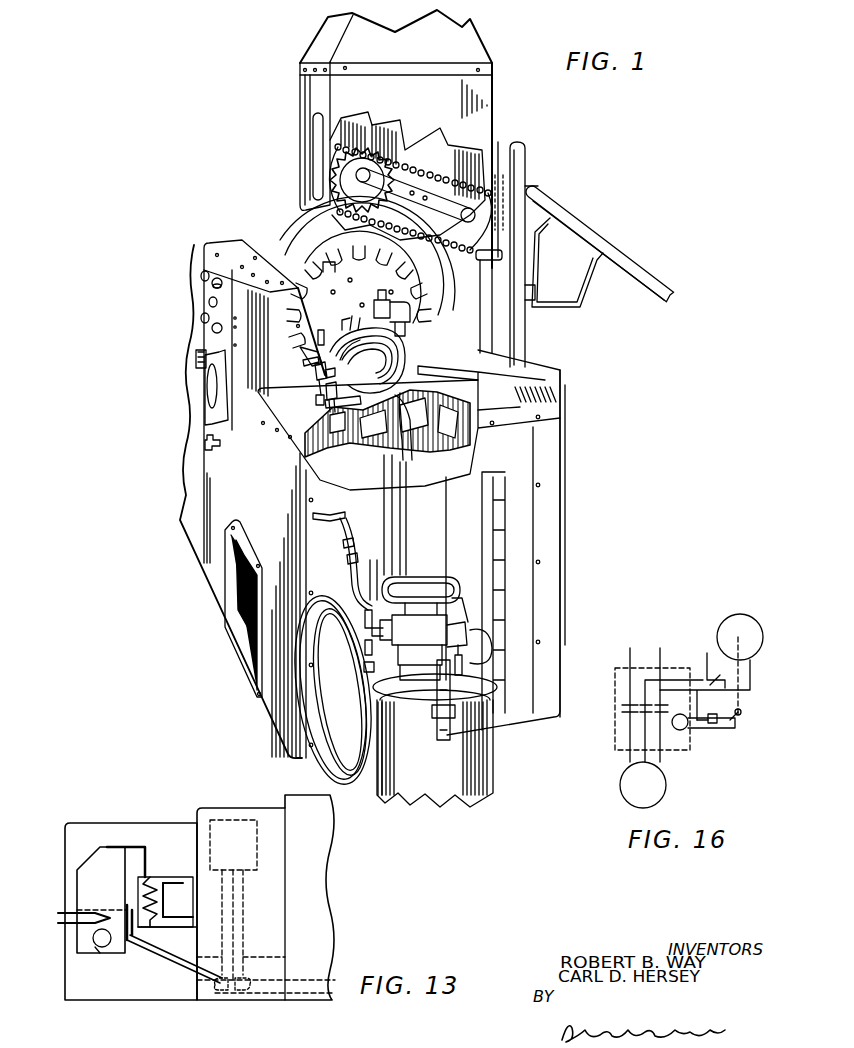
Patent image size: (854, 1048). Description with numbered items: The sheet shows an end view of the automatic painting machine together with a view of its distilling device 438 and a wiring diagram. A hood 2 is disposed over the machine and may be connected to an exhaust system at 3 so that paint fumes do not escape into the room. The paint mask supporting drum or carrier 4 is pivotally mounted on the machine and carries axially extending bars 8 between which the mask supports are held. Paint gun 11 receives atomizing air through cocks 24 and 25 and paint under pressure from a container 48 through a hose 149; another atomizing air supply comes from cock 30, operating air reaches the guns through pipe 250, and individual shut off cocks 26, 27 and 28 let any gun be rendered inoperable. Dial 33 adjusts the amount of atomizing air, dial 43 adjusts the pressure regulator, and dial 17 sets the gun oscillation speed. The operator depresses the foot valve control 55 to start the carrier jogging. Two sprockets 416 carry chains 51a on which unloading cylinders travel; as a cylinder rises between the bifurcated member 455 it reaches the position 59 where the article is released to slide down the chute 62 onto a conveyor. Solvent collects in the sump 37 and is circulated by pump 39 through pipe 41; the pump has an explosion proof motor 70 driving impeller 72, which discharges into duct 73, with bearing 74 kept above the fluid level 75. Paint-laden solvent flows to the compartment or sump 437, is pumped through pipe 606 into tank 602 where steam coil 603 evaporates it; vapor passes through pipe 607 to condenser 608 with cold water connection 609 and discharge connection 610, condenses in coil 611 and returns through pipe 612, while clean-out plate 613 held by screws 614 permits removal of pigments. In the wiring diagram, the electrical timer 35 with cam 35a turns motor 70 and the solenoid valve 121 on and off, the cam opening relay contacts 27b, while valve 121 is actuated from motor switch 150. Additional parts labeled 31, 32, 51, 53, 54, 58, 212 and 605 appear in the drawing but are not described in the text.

In FIG. 1, the hood 2 is at (482, 132).
In FIG. 1, the exhaust system connection 3 is at (470, 45).
In FIG. 1, the paint mask supporting drum or carrier 4 is at (408, 279).
In FIG. 1, the axially extending bars 8 is at (325, 272).
In FIG. 1, the paint gun 11 is at (406, 300).
In FIG. 1, the dial 17 is at (212, 330).
In FIG. 1, the cock 24 is at (293, 326).
In FIG. 1, the cock 25 is at (321, 330).
In FIG. 1, the shut off cock 26 is at (300, 347).
In FIG. 1, the shut off cock 27 is at (315, 372).
In FIG. 16, the shut off cock 27 is at (690, 750).
In FIG. 16, the relay contacts 27b is at (627, 712).
In FIG. 1, the shut off cock 28 is at (303, 362).
In FIG. 1, the cock 30 is at (387, 423).
In FIG. 1, the fitting 31 is at (329, 404).
In FIG. 1, the hose coil 32 is at (371, 388).
In FIG. 1, the dial 33 is at (201, 275).
In FIG. 1, the electrical timer 35 is at (205, 409).
In FIG. 16, the electrical timer 35 is at (750, 628).
In FIG. 16, the cam 35a is at (741, 712).
In FIG. 1, the sump 37 is at (262, 501).
In FIG. 13, the sump 37 is at (315, 878).
In FIG. 13, the pump 39 is at (252, 850).
In FIG. 1, the pipe 41 is at (221, 387).
In FIG. 13, the pipe 41 is at (258, 992).
In FIG. 1, the dial 43 is at (201, 320).
In FIG. 1, the container 48 is at (431, 770).
In FIG. 1, the regulator 51 is at (400, 577).
In FIG. 1, the chains 51a is at (445, 160).
In FIG. 1, the hose connection 53 is at (345, 514).
In FIG. 1, the hose 54 is at (370, 636).
In FIG. 1, the foot valve control 55 is at (240, 663).
In FIG. 1, the valve 58 is at (377, 291).
In FIG. 1, the position 59 is at (365, 178).
In FIG. 1, the chute 62 is at (608, 248).
In FIG. 13, the electrical motor 70 is at (240, 917).
In FIG. 16, the electrical motor 70 is at (666, 785).
In FIG. 13, the impeller 72 is at (222, 978).
In FIG. 13, the duct 73 is at (244, 978).
In FIG. 13, the bearing 74 is at (248, 940).
In FIG. 13, the fluid level 75 is at (255, 957).
In FIG. 16, the electrical valve 121 is at (714, 723).
In FIG. 1, the hose 149 is at (409, 665).
In FIG. 1, the motor switch 150 is at (197, 360).
In FIG. 16, the motor switch 150 is at (709, 661).
In FIG. 1, the control knob 212 is at (213, 287).
In FIG. 1, the pipe 250 is at (316, 400).
In FIG. 1, the sprockets 416 is at (368, 165).
In FIG. 1, the compartment or sump 437 is at (186, 530).
In FIG. 13, the compartment or sump 437 is at (224, 808).
In FIG. 13, the distilling device 438 is at (95, 993).
In FIG. 1, the bifurcated member 455 is at (514, 160).
In FIG. 13, the tank 602 is at (115, 898).
In FIG. 13, the steam coil 603 is at (115, 875).
In FIG. 13, the terminal 605 is at (58, 918).
In FIG. 13, the pipe 606 is at (165, 958).
In FIG. 13, the pipe 607 is at (120, 848).
In FIG. 13, the condenser 608 is at (152, 880).
In FIG. 13, the cold water connection 609 is at (175, 883).
In FIG. 13, the cold water discharge connection 610 is at (180, 908).
In FIG. 13, the coil 611 is at (177, 899).
In FIG. 13, the pipe 612 is at (175, 927).
In FIG. 13, the clean-out plate 613 is at (98, 945).
In FIG. 13, the screws 614 is at (105, 947).